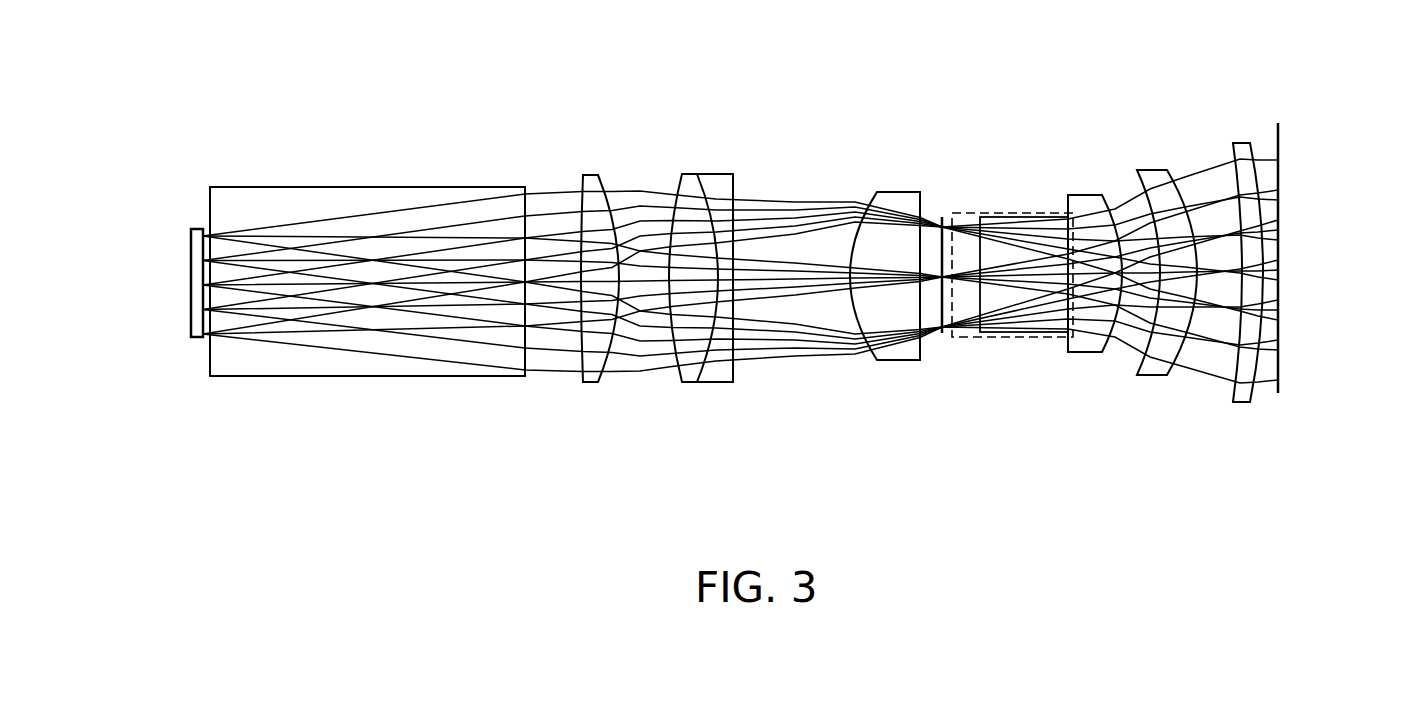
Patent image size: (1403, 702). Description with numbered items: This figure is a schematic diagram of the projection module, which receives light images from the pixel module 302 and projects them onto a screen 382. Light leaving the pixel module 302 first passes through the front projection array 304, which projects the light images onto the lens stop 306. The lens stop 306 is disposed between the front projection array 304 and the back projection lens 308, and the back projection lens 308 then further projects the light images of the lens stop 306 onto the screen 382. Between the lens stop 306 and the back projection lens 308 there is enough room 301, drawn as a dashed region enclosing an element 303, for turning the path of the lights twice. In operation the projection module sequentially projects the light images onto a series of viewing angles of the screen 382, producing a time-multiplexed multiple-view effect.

The pixel module 302 is at (197, 228).
The front projection array 304 is at (922, 99).
The back projection lens 308 is at (1275, 97).
The room 301 is at (1020, 211).
The optical element 303 is at (1017, 267).
The lens stop 306 is at (943, 300).
The screen 382 is at (1280, 132).